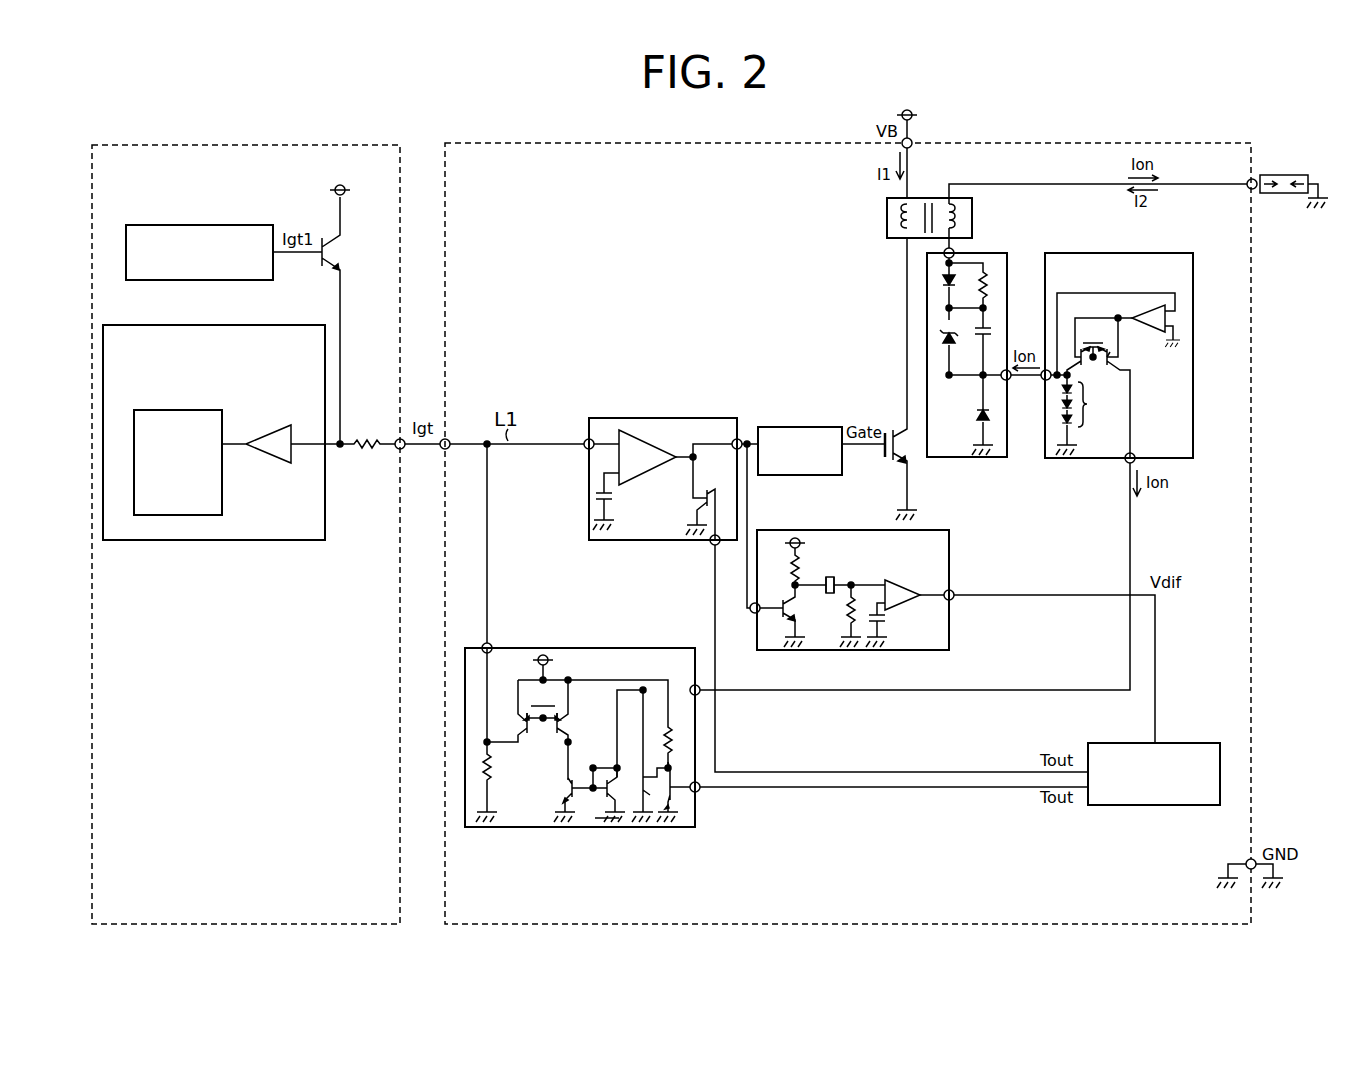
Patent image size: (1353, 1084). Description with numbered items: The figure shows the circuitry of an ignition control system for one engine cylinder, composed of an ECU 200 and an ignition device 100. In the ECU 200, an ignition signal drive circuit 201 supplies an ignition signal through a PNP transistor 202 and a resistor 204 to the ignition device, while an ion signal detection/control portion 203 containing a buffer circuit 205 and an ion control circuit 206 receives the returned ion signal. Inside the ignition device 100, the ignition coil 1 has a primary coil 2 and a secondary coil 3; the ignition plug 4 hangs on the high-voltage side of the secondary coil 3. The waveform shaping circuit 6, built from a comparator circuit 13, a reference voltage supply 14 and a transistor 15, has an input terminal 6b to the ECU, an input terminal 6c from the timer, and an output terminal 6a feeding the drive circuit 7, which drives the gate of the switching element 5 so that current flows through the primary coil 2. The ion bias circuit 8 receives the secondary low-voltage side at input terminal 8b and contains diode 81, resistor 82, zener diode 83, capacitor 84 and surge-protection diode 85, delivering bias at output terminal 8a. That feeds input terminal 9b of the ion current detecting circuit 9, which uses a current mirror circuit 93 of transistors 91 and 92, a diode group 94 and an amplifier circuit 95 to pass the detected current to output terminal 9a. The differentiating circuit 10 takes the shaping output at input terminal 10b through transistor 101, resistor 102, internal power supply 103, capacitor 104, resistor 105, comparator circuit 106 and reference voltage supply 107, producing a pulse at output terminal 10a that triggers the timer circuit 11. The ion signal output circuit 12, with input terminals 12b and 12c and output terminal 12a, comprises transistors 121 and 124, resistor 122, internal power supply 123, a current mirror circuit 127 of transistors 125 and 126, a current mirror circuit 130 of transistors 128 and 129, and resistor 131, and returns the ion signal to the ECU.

The electronic control unit 200 is at (213, 145).
The ignition signal drive circuit 201 is at (220, 225).
The PNP transistor 202 is at (340, 263).
The ion signal detection/control portion 203 is at (213, 324).
The resistor 204 is at (370, 438).
The buffer circuit 205 is at (270, 435).
The ion control circuit 206 is at (178, 410).
The ignition device 100 is at (570, 143).
The ignition coil 1 is at (887, 211).
The primary coil 2 is at (890, 222).
The secondary coil 3 is at (955, 196).
The ignition plug 4 is at (1285, 175).
The switching element 5 is at (894, 431).
The ignition signal waveform shaping circuit 6 is at (610, 417).
The output terminal 6a is at (740, 440).
The input terminal 6b is at (587, 440).
The input terminal 6c is at (712, 545).
The drive circuit 7 is at (800, 427).
The ion bias circuit 8 is at (1005, 253).
The output terminal 8a is at (1008, 381).
The input terminal 8b is at (954, 249).
The diode 81 is at (942, 280).
The resistor 82 is at (975, 295).
The zener diode 83 is at (942, 336).
The capacitor 84 is at (976, 335).
The diode 85 is at (982, 432).
The ion current detecting circuit 9 is at (1176, 253).
The output terminal 9a is at (1126, 462).
The input terminal 9b is at (1044, 370).
The transistor 91 is at (1072, 301).
The transistor 92 is at (1115, 352).
The current mirror circuit 93 is at (1099, 386).
The diode group 94 is at (1092, 415).
The amplifier circuit 95 is at (1150, 309).
The differentiating circuit 10 is at (870, 530).
The output terminal 10a is at (952, 592).
The input terminal 10b is at (753, 614).
The transistor 101 is at (793, 618).
The resistor 102 is at (795, 570).
The internal power supply 103 is at (802, 548).
The capacitor 104 is at (838, 583).
The resistor 105 is at (853, 630).
The comparator circuit 106 is at (905, 585).
The reference voltage supply 107 is at (882, 625).
The timer circuit 11 is at (1156, 805).
The ion signal output circuit 12 is at (630, 648).
The output terminal 12a is at (492, 644).
The input terminal 12b is at (694, 683).
The input terminal 12c is at (700, 794).
The transistor 121 is at (680, 805).
The resistor 122 is at (673, 735).
The internal power supply 123 is at (546, 655).
The transistor 124 is at (650, 790).
The transistor 125 is at (616, 795).
The transistor 126 is at (570, 788).
The current mirror circuit 127 is at (616, 756).
The transistor 128 is at (562, 722).
The transistor 129 is at (525, 716).
The current mirror circuit 130 is at (529, 730).
The resistor 131 is at (493, 766).
The comparator circuit 13 is at (639, 430).
The reference voltage supply 14 is at (600, 491).
The transistor 15 is at (693, 500).